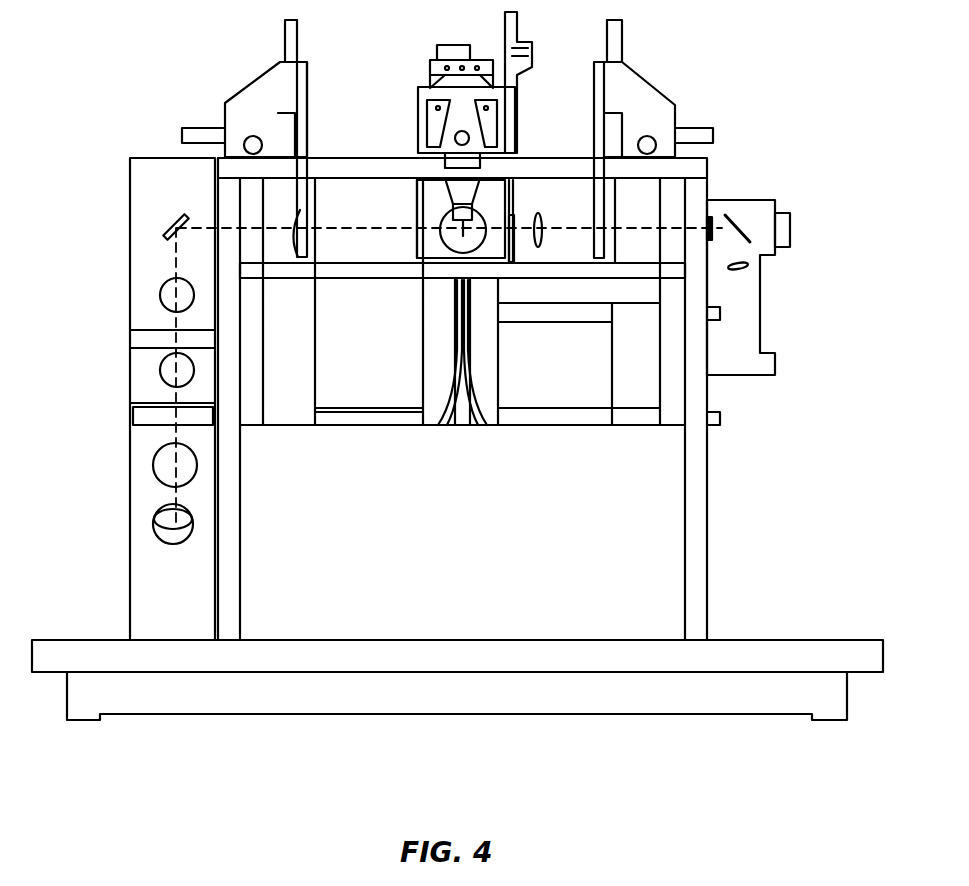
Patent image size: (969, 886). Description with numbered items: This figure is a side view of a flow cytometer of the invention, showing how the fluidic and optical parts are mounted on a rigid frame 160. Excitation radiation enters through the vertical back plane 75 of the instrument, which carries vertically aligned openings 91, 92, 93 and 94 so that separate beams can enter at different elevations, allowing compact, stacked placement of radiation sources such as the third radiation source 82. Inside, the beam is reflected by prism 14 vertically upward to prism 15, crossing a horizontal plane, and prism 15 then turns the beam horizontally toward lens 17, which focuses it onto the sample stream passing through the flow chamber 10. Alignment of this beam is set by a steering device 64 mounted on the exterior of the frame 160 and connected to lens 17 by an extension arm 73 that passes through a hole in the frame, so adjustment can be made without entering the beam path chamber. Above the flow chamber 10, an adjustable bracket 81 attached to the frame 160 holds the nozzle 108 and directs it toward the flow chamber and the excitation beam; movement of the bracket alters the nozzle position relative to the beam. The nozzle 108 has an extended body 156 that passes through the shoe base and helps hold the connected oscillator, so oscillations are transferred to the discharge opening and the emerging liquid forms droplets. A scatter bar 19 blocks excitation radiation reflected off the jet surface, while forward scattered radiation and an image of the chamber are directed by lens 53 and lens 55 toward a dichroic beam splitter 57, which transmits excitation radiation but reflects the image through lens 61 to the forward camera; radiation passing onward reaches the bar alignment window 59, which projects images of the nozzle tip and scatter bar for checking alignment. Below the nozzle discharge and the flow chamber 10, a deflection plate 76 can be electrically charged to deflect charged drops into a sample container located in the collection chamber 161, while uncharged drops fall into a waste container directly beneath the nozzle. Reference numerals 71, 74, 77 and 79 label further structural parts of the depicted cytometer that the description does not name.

The flow chamber 10 is at (440, 237).
The prism 14 is at (158, 535).
The prism 15 is at (165, 225).
The lens 17 is at (298, 213).
The scatter bar 19 is at (447, 257).
The lens 53 is at (515, 257).
The lens 55 is at (540, 213).
The dichroic beam splitter 57 is at (743, 208).
The bar alignment window 59 is at (783, 225).
The lens 61 is at (737, 270).
The steering device 64 is at (262, 72).
The right bracket 71 is at (647, 78).
The extension arm 73 is at (307, 95).
The right post 74 is at (594, 108).
The back plane 75 is at (145, 172).
The deflection plate 76 is at (485, 410).
The feed tube 77 is at (437, 410).
The fiber spool 79 is at (453, 213).
The adjustable bracket 81 is at (425, 78).
The third radiation source 82 is at (470, 714).
The opening 91 is at (158, 507).
The opening 92 is at (157, 453).
The opening 93 is at (160, 367).
The opening 94 is at (163, 287).
The nozzle 108 is at (467, 188).
The extended body 156 is at (456, 138).
The rigid frame 160 is at (700, 172).
The collection chamber 161 is at (648, 525).